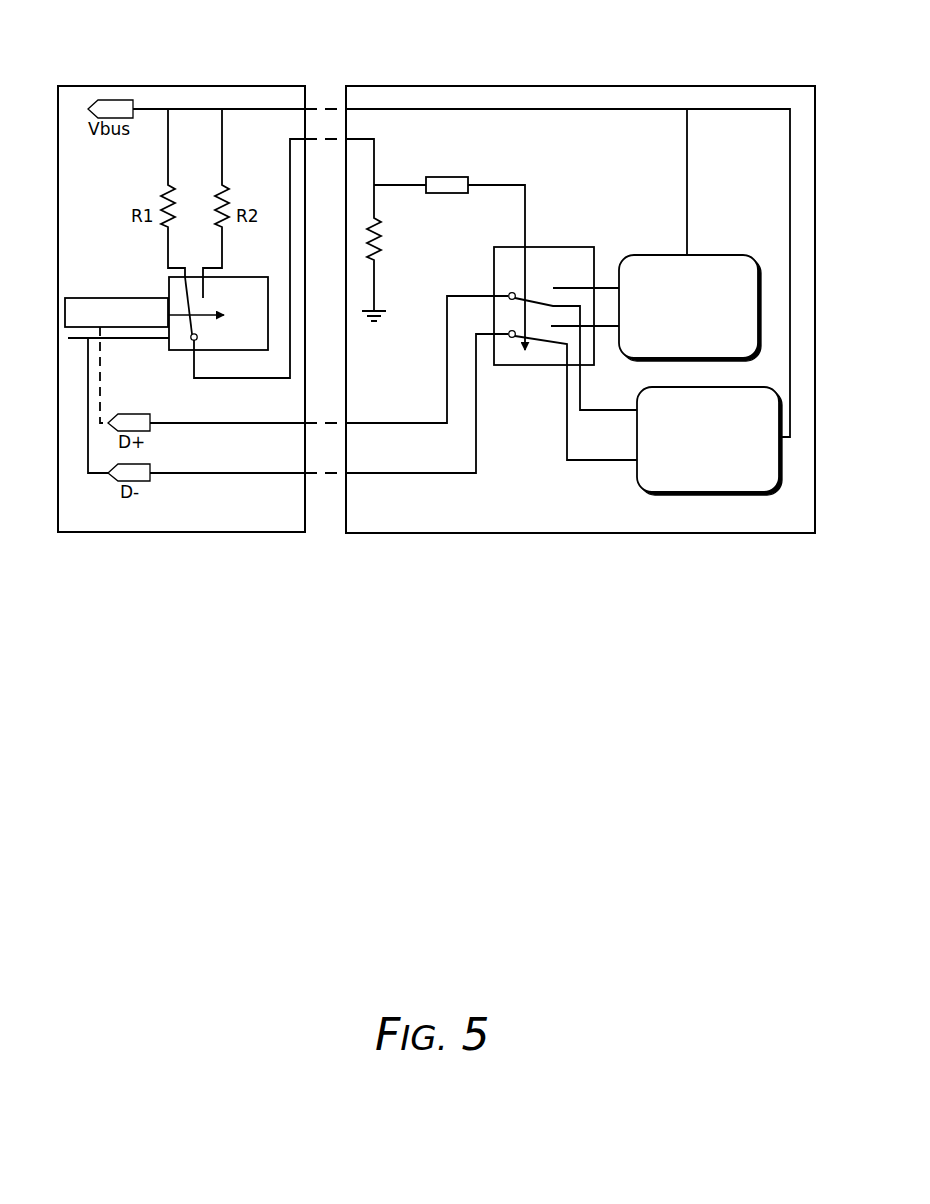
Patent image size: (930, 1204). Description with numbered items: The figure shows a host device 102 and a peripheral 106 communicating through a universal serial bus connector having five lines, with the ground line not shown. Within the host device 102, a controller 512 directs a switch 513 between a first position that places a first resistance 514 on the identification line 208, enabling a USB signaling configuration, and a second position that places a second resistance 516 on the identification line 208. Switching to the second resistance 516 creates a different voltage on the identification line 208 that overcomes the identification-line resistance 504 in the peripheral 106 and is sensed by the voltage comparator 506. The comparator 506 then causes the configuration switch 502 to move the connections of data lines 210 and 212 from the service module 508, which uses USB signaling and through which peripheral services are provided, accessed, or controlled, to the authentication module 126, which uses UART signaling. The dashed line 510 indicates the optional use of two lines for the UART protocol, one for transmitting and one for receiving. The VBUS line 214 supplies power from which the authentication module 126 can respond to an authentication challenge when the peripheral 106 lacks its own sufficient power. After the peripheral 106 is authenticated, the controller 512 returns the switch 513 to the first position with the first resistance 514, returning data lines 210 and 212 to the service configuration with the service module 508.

The host device 102 is at (131, 86).
The peripheral 106 is at (734, 86).
The VBUS line 214 is at (236, 106).
The second resistance R2 516 is at (247, 184).
The switch 513 is at (256, 277).
The first resistance R1 514 is at (149, 191).
The controller 512 is at (140, 298).
The dashed line 510 is at (111, 389).
The identification line 208 is at (263, 388).
The data line 210 is at (185, 431).
The data line 212 is at (185, 483).
The voltage comparator 506 is at (490, 147).
The identification-line resistance 504 is at (387, 252).
The configuration switch 502 is at (560, 247).
The authentication module 126 is at (690, 308).
The service module 508 is at (709, 441).